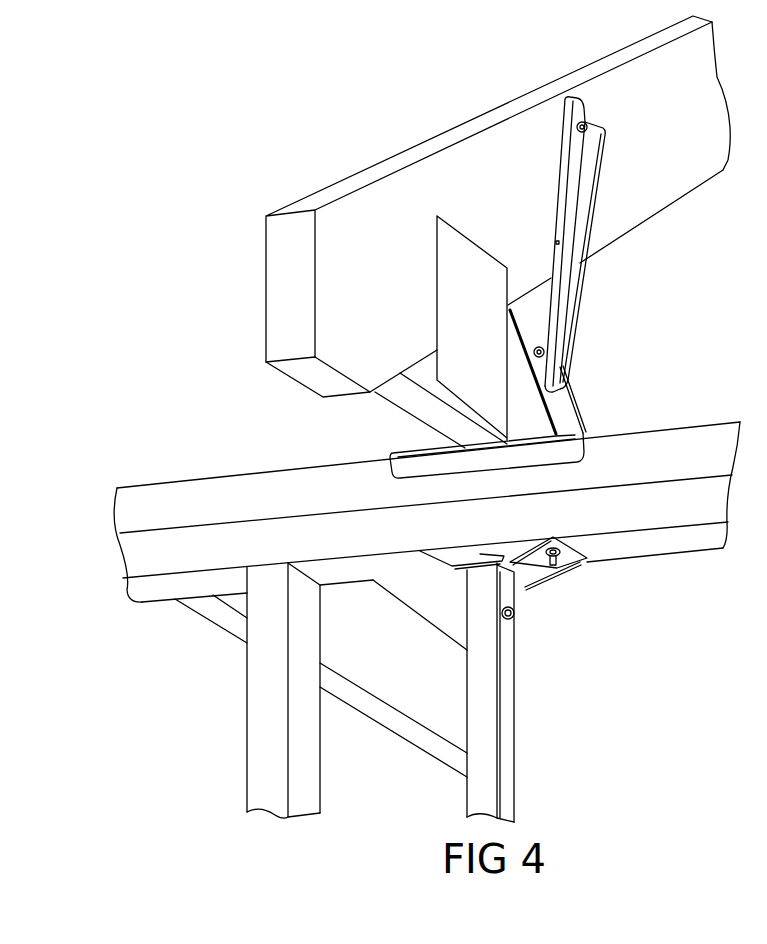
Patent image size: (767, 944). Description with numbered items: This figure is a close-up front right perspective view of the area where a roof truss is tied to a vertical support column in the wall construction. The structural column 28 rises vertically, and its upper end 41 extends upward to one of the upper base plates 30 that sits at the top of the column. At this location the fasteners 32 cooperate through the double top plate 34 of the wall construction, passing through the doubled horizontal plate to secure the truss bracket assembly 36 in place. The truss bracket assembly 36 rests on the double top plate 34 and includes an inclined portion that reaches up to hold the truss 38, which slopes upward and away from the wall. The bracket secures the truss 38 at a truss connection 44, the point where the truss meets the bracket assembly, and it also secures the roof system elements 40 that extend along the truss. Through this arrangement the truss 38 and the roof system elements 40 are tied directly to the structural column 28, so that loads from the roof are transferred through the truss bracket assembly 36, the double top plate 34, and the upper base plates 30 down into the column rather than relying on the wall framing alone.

The structural column 28 is at (510, 733).
The upper base plate 30 is at (478, 557).
The fasteners 32 is at (462, 563).
The double top plate 34 is at (143, 552).
The truss bracket assembly 36 is at (575, 390).
The truss 38 is at (278, 283).
The roof system elements 40 is at (583, 345).
The upper end 41 is at (505, 582).
The truss connection 44 is at (425, 450).